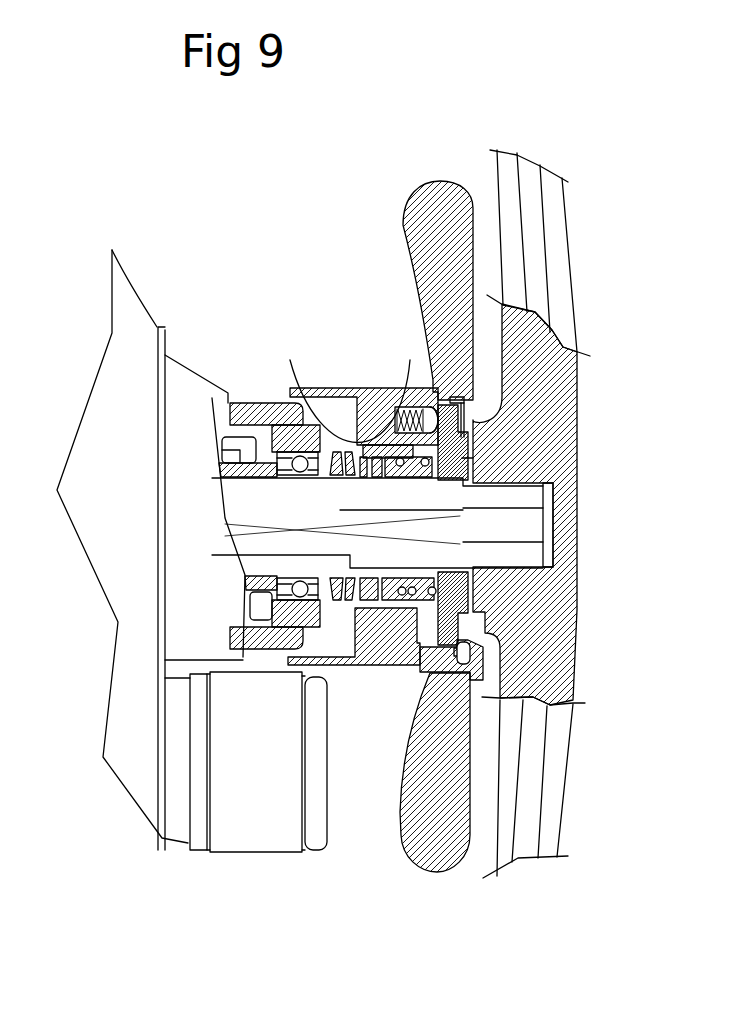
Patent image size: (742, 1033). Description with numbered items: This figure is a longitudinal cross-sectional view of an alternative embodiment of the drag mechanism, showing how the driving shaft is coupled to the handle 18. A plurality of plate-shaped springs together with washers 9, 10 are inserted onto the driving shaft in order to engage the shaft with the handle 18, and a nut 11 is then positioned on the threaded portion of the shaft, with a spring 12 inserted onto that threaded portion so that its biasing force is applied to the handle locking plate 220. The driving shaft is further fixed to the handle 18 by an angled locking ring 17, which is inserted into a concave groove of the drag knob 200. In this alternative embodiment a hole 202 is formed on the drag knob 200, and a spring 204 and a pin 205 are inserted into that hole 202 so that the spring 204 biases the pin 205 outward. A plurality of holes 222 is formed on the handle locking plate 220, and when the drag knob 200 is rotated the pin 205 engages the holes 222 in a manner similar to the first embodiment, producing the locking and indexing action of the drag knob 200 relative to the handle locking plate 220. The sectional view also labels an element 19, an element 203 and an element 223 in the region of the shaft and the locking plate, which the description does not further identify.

The washer 9 is at (352, 598).
The washer 10 is at (362, 608).
The nut 11 is at (392, 600).
The spring 12 is at (410, 607).
The angled locking ring 17 is at (470, 400).
The handle 18 is at (562, 298).
The impeller hub 19 is at (462, 470).
The drag knob 200 is at (447, 178).
The hole 202 is at (322, 393).
The mechanical seal 203 is at (416, 405).
The spring 204 is at (393, 408).
The pin 205 is at (420, 400).
The handle locking plate 220 is at (462, 432).
The hole 222 is at (470, 676).
The seal seat 223 is at (465, 609).